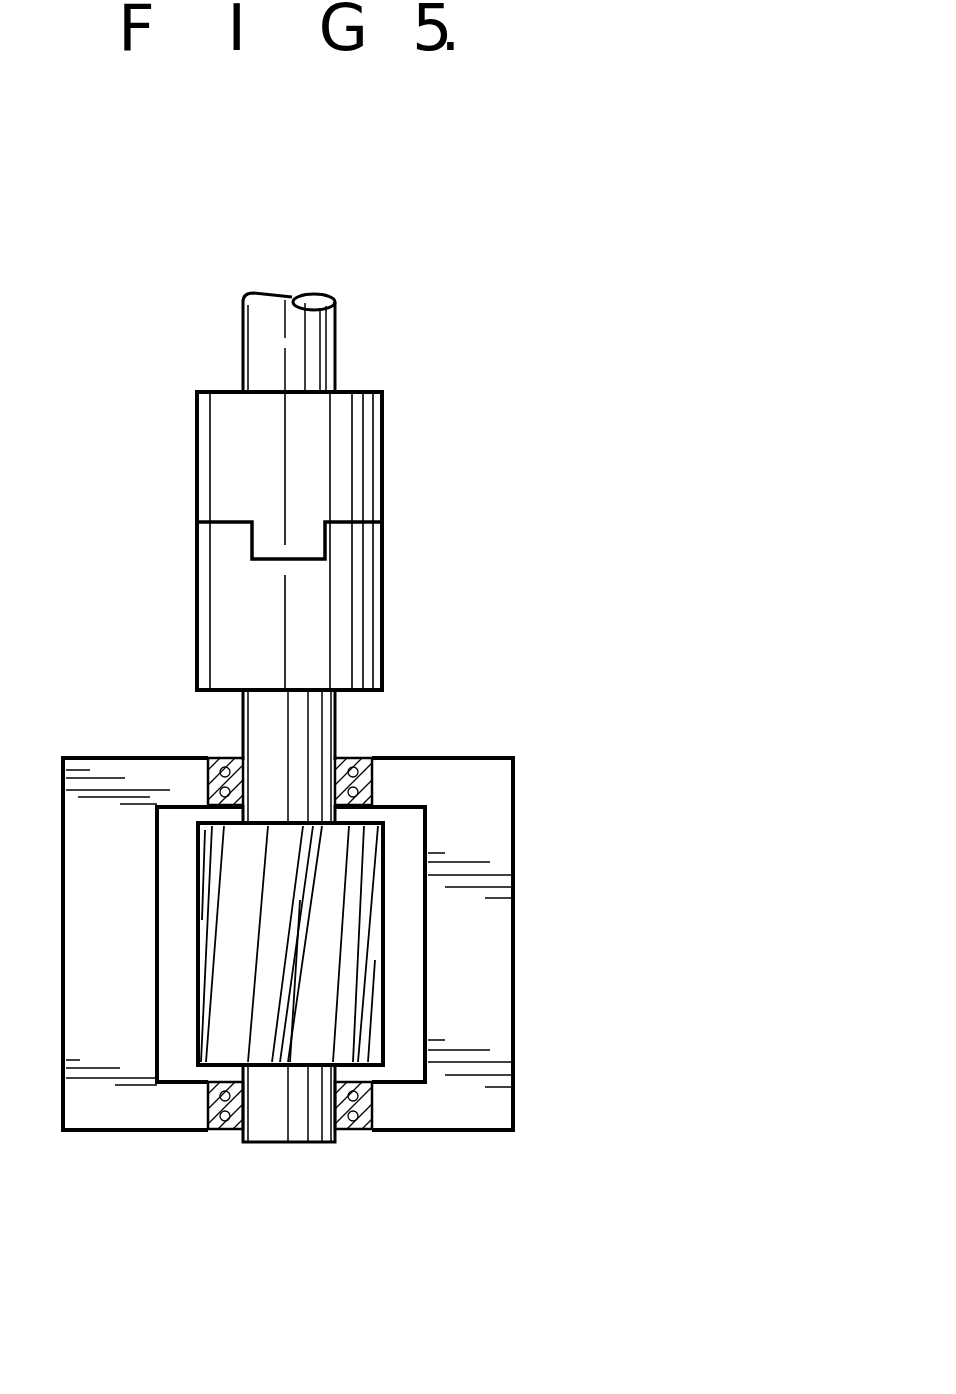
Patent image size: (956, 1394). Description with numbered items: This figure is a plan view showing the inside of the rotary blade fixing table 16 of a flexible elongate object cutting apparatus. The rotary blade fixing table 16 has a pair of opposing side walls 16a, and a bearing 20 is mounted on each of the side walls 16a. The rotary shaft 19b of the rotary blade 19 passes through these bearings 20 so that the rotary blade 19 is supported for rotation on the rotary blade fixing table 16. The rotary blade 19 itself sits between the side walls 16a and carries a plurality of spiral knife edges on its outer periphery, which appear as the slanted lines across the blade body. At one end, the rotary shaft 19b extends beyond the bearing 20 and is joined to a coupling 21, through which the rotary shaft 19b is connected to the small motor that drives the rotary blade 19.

The rotary blade fixing table 16 is at (518, 842).
The side walls 16a is at (467, 758).
The rotary blade 19 is at (363, 910).
The rotary shaft 19b is at (293, 1142).
The bearing 20 is at (355, 760).
The coupling 21 is at (382, 450).